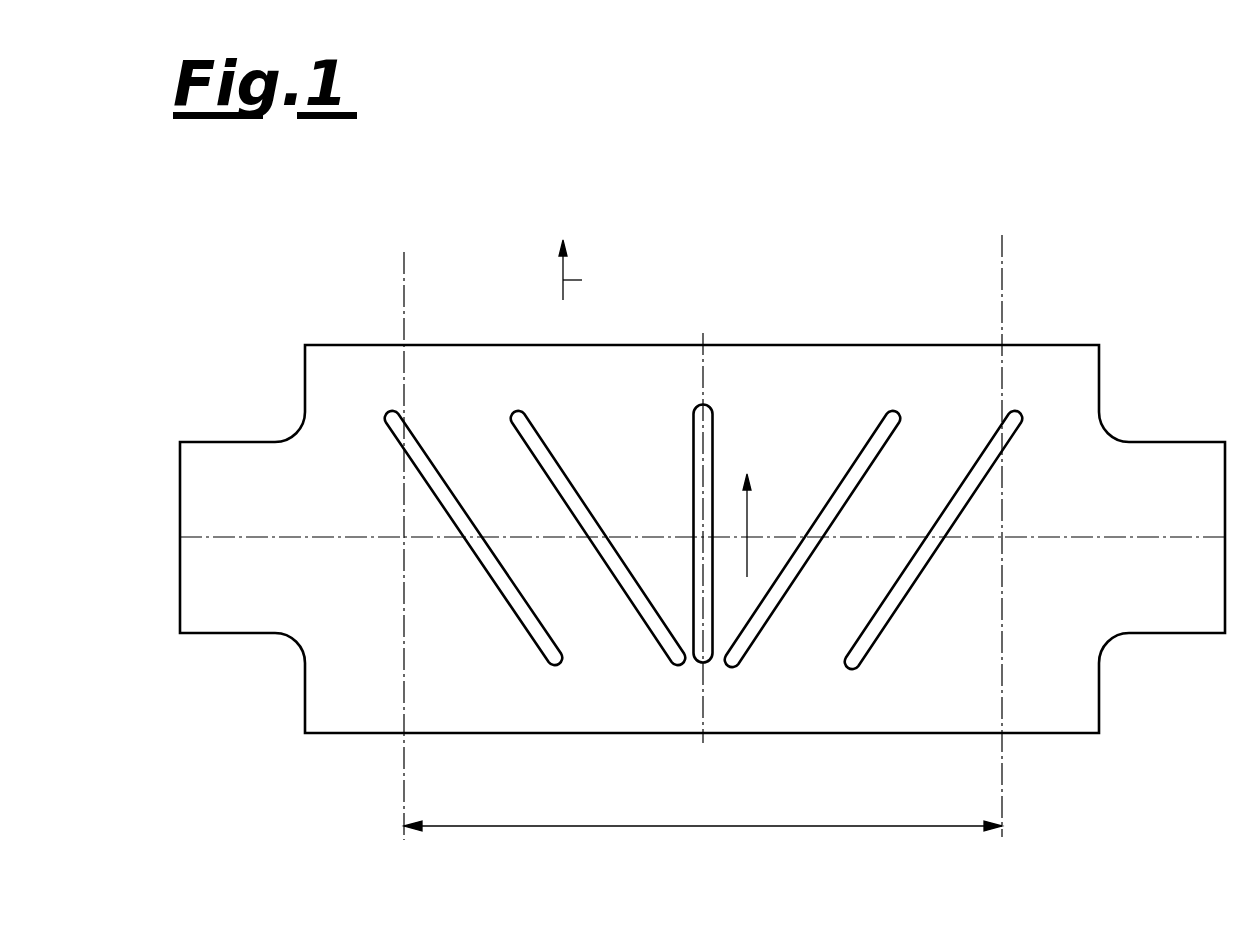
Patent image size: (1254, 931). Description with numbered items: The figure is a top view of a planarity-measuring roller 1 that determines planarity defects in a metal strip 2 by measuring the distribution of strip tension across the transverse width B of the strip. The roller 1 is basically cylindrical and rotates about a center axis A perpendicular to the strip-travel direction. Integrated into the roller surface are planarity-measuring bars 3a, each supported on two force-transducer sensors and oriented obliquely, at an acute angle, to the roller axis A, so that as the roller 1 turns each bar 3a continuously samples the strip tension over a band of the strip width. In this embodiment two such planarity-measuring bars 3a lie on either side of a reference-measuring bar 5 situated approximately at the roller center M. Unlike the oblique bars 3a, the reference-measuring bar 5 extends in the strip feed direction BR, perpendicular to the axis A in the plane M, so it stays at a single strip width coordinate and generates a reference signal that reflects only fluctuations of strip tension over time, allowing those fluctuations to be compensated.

The planarity-measuring roller 1 is at (1033, 346).
The metal strip 2 is at (1003, 690).
The planarity-measuring bar 3a is at (515, 412).
The reference-measuring bar 5 is at (706, 408).
The center axis A is at (400, 540).
The transverse width B is at (556, 826).
The roller center M is at (705, 712).
The strip feed direction BR is at (770, 502).